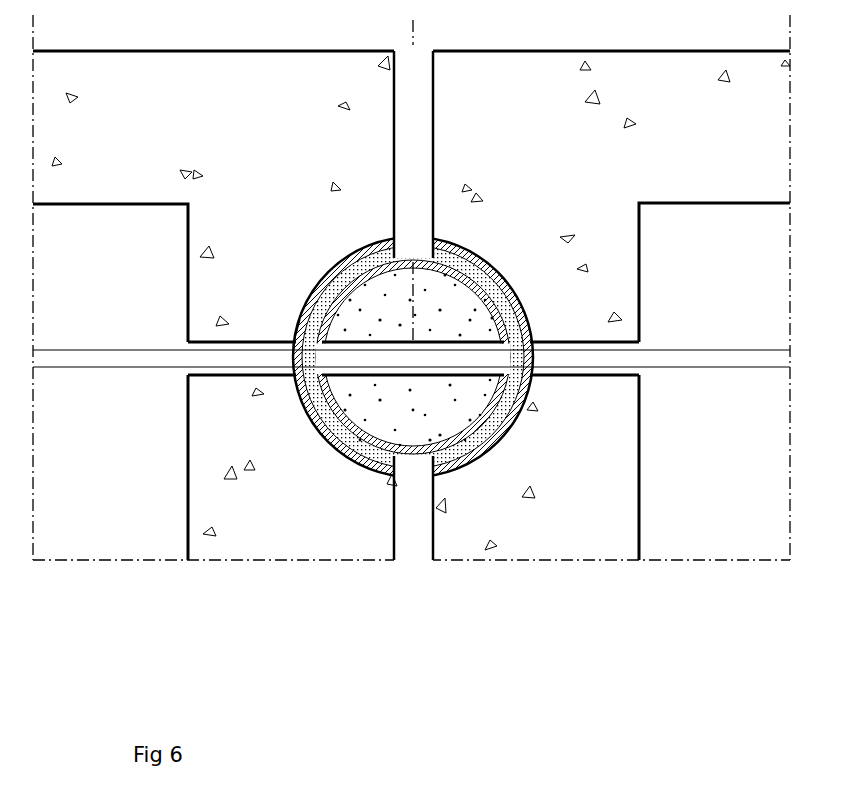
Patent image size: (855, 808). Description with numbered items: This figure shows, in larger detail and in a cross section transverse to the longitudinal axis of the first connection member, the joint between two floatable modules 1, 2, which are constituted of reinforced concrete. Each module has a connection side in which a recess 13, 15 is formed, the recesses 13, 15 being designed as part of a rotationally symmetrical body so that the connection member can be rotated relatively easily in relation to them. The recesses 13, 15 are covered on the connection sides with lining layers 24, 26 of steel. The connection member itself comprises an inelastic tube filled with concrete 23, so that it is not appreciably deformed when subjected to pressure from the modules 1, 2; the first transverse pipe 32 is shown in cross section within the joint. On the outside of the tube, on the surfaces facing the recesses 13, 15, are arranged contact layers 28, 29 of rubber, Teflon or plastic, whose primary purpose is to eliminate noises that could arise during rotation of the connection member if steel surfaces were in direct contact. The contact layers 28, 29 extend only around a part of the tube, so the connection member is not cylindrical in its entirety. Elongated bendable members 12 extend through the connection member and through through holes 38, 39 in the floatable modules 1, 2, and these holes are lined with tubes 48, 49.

The module 1 is at (168, 124).
The module 2 is at (495, 109).
The elongated bendable member 12 is at (72, 357).
The recess 13 is at (322, 240).
The recess 15 is at (482, 238).
The concrete 23 is at (460, 303).
The lining layer 24 is at (325, 442).
The lining layer 26 is at (527, 418).
The contact layer 28 is at (473, 470).
The contact layer 29 is at (358, 458).
The first transverse pipe 32 is at (362, 338).
The through hole 38 is at (640, 340).
The through hole 39 is at (188, 376).
The tube 48 is at (610, 368).
The tube 49 is at (213, 340).